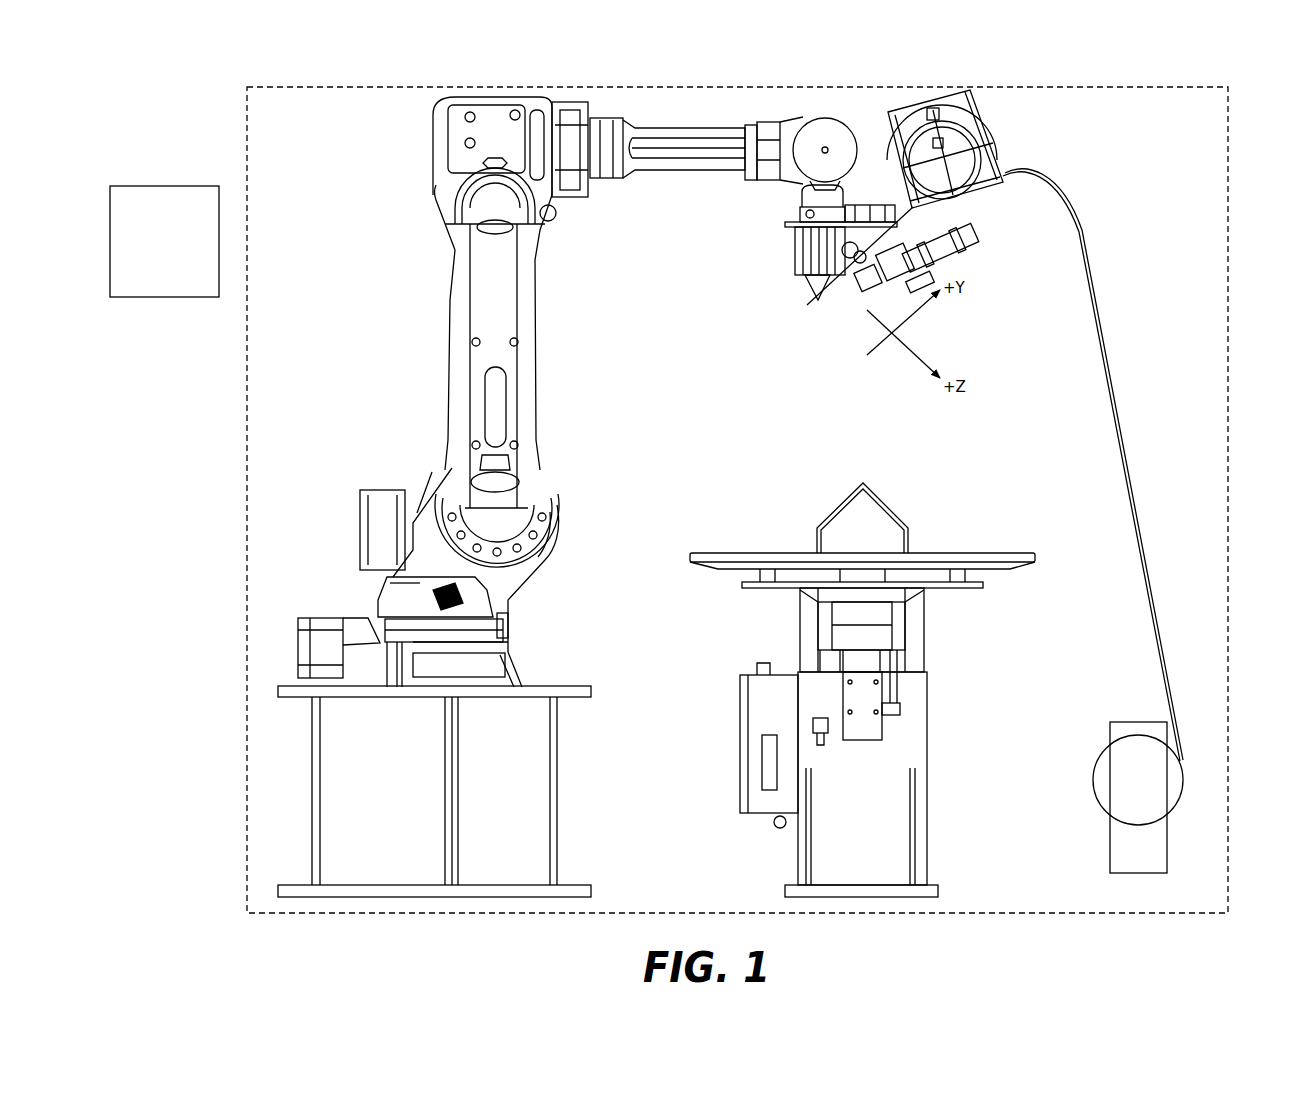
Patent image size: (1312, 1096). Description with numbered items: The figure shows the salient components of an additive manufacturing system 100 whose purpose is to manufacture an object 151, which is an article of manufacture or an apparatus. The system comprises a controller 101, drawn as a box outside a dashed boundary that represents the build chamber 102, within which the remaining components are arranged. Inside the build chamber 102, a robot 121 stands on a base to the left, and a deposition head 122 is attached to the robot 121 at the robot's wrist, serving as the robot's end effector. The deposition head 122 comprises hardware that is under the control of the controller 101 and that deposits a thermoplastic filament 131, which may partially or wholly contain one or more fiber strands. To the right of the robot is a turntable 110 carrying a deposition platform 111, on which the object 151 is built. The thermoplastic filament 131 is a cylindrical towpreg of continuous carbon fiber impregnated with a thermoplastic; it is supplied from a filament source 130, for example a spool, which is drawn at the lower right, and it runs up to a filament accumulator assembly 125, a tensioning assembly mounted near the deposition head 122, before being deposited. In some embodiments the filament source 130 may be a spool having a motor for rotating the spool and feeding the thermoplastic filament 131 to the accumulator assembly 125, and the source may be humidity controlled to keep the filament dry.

The additive manufacturing system 100 is at (145, 148).
The controller 101 is at (110, 214).
The build chamber 102 is at (1230, 120).
The turntable 110 is at (948, 699).
The deposition platform 111 is at (740, 553).
The robot 121 is at (428, 276).
The deposition head 122 is at (792, 255).
The filament accumulator assembly 125 is at (990, 142).
The filament source 130 is at (1093, 780).
The thermoplastic filament 131 is at (1107, 380).
The object 151 is at (845, 497).